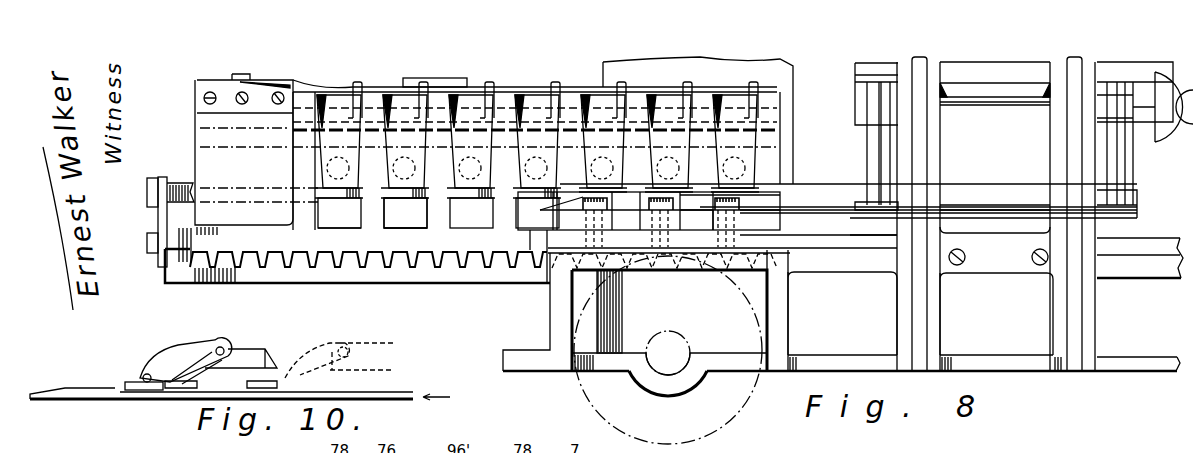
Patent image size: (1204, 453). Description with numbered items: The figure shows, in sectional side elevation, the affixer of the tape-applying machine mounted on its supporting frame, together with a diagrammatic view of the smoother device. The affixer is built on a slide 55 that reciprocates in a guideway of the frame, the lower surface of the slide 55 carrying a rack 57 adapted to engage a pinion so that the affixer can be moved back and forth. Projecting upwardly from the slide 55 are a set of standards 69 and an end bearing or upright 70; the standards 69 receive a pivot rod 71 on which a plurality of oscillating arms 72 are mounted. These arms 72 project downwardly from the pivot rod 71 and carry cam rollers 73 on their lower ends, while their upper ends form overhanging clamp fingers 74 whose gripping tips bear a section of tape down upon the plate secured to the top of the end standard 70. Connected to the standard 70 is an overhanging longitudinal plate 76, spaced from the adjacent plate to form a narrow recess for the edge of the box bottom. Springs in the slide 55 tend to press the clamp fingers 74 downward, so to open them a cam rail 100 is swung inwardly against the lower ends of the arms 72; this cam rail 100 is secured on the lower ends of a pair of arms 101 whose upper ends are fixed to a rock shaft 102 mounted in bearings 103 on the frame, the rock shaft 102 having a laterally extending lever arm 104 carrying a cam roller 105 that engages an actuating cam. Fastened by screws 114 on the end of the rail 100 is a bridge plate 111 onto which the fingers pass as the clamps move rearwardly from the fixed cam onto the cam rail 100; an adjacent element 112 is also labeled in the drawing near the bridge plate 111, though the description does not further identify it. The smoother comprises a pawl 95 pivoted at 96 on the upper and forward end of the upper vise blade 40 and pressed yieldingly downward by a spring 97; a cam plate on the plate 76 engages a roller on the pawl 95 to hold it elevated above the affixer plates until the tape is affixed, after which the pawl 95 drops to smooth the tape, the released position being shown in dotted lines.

In FIG. 8, the end bearing or upright 70 is at (210, 130).
In FIG. 8, the pivot rod 71 is at (305, 107).
In FIG. 8, the oscillating arms 72 is at (333, 110).
In FIG. 8, the clamp fingers 74 is at (363, 83).
In FIG. 8, the cam rollers 73 is at (330, 198).
In FIG. 8, the standards 69 is at (303, 210).
In FIG. 8, the slide 55 is at (465, 272).
In FIG. 8, the rack 57 is at (425, 262).
In FIG. 8, the bridge plate 111 is at (720, 187).
In FIG. 8, the carriage block 112 is at (704, 212).
In FIG. 8, the cam rail 100 is at (808, 193).
In FIG. 8, the screws 114 is at (780, 222).
In FIG. 8, the bearings 103 is at (902, 223).
In FIG. 8, the rock shaft 102 is at (1057, 68).
In FIG. 8, the arms 101 is at (877, 147).
In FIG. 8, the lever arm 104 is at (1150, 93).
In FIG. 8, the cam roller 105 is at (1170, 138).
In FIG. 10, the pawl (smoother) 95 is at (177, 367).
In FIG. 10, the spring 97 is at (222, 340).
In FIG. 10, the pivot 96 is at (233, 343).
In FIG. 10, the upper blade of the vise 40 is at (327, 343).
In FIG. 10, the overhanging plate 76 is at (383, 398).